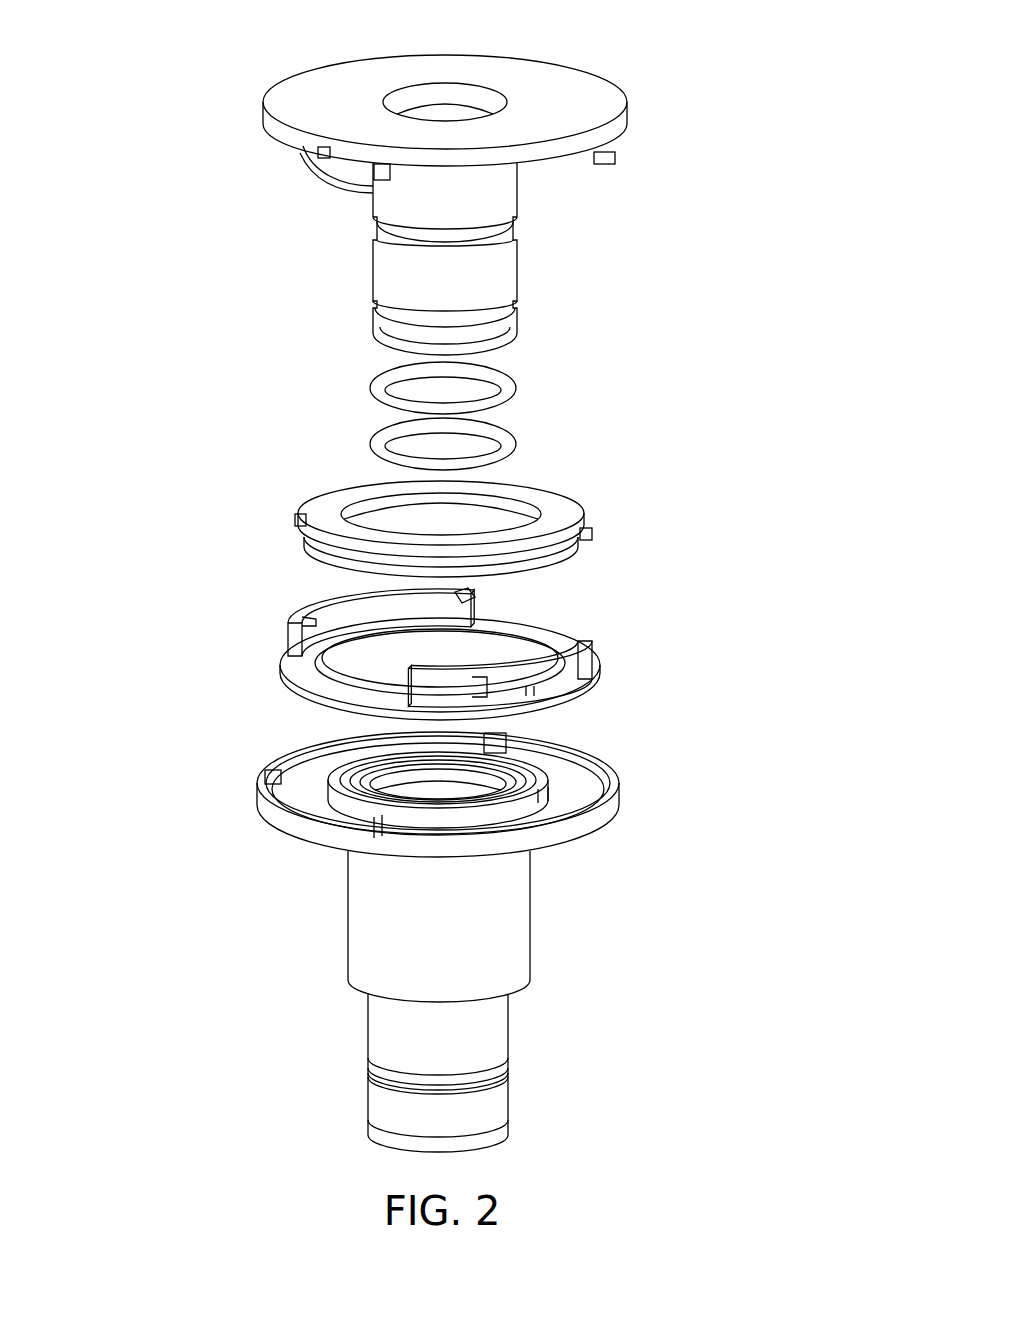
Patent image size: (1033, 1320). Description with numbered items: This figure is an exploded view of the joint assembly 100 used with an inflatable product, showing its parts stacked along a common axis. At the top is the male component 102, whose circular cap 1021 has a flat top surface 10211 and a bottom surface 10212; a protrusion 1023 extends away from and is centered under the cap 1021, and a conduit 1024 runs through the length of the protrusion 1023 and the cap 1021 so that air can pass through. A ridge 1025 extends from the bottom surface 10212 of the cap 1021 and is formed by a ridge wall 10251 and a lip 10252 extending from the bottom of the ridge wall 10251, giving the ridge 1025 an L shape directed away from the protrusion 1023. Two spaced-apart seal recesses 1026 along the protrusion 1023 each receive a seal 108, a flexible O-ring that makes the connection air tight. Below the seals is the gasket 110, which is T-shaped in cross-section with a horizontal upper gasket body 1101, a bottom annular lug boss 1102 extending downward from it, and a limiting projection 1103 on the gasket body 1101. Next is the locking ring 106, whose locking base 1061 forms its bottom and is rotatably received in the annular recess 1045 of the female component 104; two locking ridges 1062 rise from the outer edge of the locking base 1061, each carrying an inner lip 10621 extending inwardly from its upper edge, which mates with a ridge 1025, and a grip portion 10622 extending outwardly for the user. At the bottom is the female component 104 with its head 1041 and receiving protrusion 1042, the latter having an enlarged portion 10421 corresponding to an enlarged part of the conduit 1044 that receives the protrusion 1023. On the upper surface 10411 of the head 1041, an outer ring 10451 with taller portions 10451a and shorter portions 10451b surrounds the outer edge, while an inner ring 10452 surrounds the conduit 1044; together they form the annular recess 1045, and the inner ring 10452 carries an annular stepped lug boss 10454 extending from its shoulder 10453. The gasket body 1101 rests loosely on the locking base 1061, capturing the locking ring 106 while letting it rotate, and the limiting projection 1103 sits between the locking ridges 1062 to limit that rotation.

The joint assembly 100 is at (710, 143).
The male component 102 is at (666, 252).
The cap 1021 is at (596, 100).
The flat top surface 10211 is at (298, 106).
The bottom surface 10212 is at (528, 170).
The protrusion 1023 is at (346, 320).
The conduit 1024 is at (448, 108).
The ridge 1025 is at (222, 152).
The ridge wall 10251 is at (390, 180).
The lip 10252 is at (320, 166).
The seal recess 1026 is at (366, 222).
The seal 108 is at (358, 388).
The gasket 110 is at (622, 522).
The upper gasket body 1101 is at (340, 515).
The bottom annular lug boss 1102 is at (574, 542).
The limiting projection 1103 is at (298, 516).
The locking ring 106 is at (680, 678).
The locking base 1061 is at (549, 632).
The locking ridge 1062 is at (288, 622).
The inner lip 10621 is at (312, 612).
The grip portion 10622 is at (530, 690).
The female component 104 is at (192, 816).
The head 1041 is at (646, 802).
The upper surface 10411 is at (592, 776).
The receiving protrusion 1042 is at (320, 1035).
The enlarged portion 10421 is at (514, 955).
The conduit 1044 is at (333, 763).
The annular recess 1045 is at (318, 792).
The outer ring 10451 is at (250, 777).
The taller portions 10451a is at (357, 790).
The shorter portions 10451b is at (268, 812).
The inner ring 10452 is at (552, 800).
The shoulder 10453 is at (573, 790).
The annular stepped lug boss 10454 is at (508, 790).